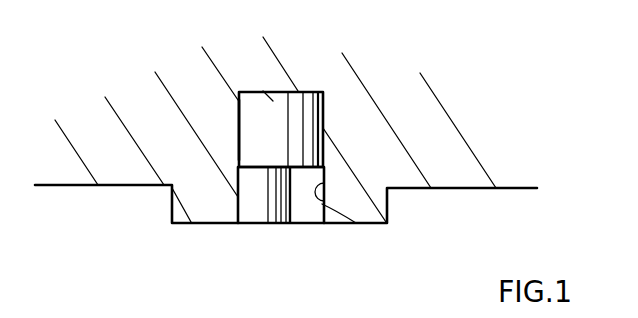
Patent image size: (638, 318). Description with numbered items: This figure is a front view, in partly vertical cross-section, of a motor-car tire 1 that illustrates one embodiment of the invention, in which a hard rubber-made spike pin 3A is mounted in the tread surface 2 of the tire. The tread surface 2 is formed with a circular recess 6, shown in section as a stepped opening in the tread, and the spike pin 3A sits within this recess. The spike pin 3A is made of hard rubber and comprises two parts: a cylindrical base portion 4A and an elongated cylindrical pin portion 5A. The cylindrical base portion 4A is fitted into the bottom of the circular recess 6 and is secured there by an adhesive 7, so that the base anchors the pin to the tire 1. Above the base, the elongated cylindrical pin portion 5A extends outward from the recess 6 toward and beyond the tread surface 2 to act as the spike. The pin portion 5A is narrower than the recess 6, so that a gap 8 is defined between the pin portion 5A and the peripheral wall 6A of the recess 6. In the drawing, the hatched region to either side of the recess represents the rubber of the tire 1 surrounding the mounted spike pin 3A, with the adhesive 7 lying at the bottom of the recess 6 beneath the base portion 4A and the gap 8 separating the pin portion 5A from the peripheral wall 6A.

The motor-car tire 1 is at (430, 110).
The tread surface 2 is at (337, 223).
The hard rubber-made spike pin 3A is at (254, 86).
The cylindrical base portion 4A is at (308, 120).
The elongated cylindrical pin portion 5A is at (275, 207).
The recess 6 is at (238, 203).
The peripheral wall 6A is at (356, 223).
The adhesive 7 is at (238, 131).
The gap 8 is at (311, 211).